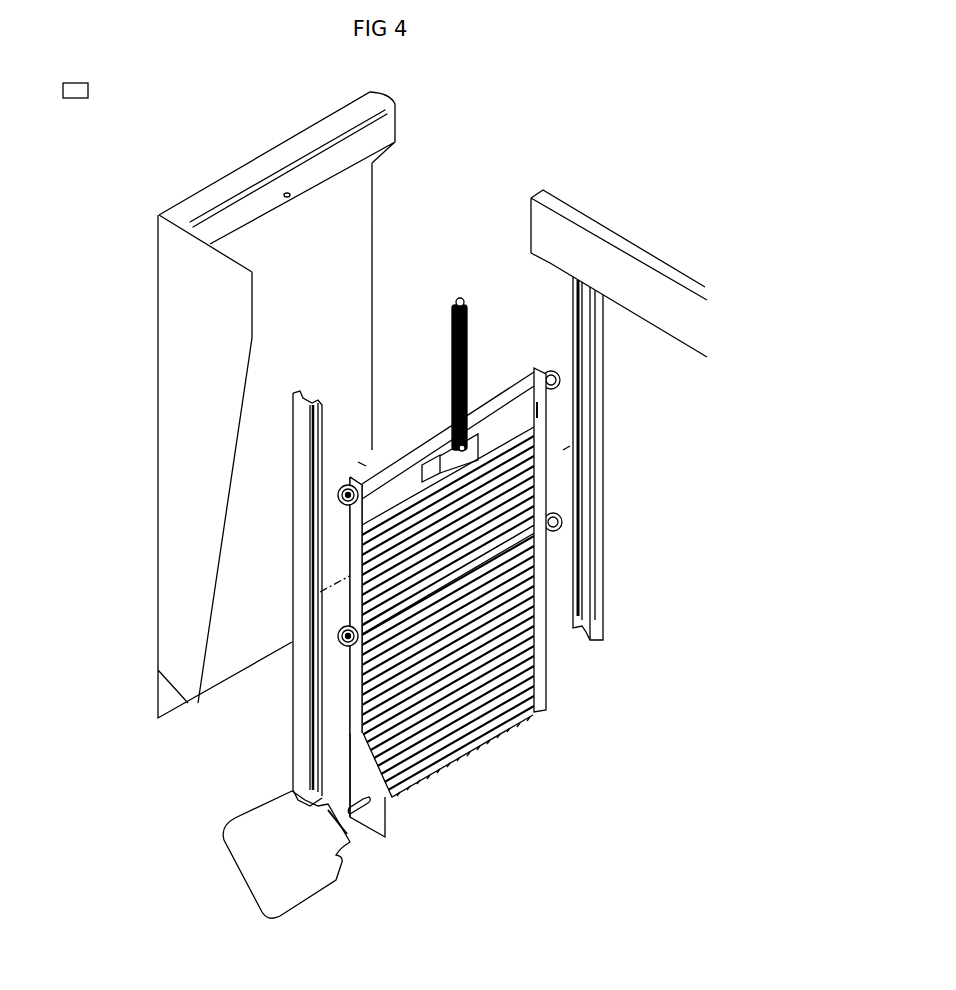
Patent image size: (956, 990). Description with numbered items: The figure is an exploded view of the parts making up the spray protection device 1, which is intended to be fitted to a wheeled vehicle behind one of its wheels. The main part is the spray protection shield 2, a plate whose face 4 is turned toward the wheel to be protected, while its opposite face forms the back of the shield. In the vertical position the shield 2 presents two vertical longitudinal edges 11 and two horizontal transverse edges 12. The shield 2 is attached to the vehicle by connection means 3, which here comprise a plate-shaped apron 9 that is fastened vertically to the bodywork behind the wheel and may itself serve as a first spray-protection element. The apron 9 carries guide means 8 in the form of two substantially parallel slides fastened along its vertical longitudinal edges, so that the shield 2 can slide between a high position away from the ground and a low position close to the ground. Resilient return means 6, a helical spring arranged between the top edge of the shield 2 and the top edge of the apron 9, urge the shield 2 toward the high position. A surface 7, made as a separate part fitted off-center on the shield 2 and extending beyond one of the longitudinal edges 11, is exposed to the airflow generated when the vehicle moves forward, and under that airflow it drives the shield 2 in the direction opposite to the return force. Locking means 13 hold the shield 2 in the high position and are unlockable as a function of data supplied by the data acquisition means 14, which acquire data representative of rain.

The spray protection device 1 is at (477, 160).
The spray protection shield 2 is at (458, 735).
The connection means 3 is at (130, 493).
The face of the shield 4 is at (427, 773).
The resilient return means 6 is at (473, 332).
The surface 7 is at (298, 877).
The guide means 8 is at (302, 685).
The apron 9 is at (245, 583).
The longitudinal edges 11 is at (550, 688).
The transverse edges 12 is at (512, 722).
The locking means 13 is at (552, 265).
The data acquisition means 14 is at (63, 97).